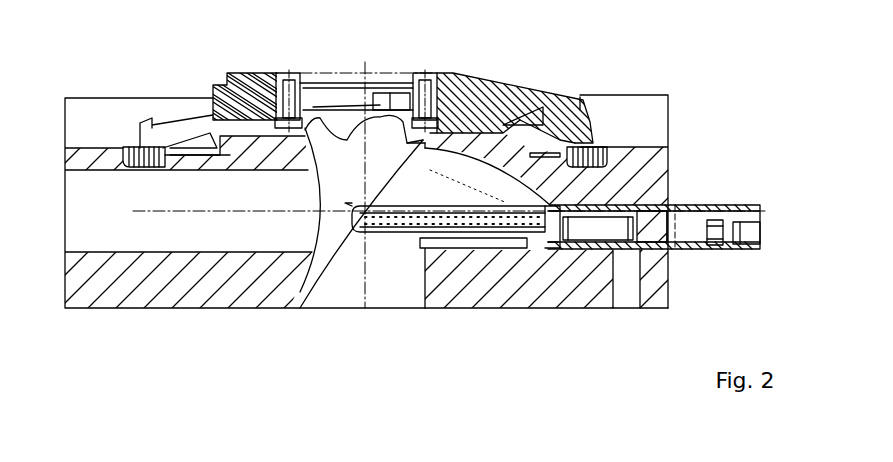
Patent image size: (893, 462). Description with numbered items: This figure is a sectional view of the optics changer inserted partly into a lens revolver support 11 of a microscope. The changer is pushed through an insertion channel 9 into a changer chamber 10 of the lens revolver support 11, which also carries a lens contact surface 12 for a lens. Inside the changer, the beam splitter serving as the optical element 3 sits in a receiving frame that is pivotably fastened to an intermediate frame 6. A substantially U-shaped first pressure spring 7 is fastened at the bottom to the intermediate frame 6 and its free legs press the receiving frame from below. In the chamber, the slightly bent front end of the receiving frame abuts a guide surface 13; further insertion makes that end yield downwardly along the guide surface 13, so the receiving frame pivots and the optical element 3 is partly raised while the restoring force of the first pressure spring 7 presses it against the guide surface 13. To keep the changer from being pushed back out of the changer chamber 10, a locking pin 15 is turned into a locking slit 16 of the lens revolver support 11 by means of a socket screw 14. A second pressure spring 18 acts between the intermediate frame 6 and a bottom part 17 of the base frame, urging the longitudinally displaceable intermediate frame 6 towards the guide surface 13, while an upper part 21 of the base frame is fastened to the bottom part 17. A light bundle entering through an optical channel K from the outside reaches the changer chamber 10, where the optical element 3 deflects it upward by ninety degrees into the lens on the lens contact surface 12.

The optical channel K is at (212, 240).
The optical element 3 is at (383, 223).
The intermediate frame 6 is at (570, 215).
The first pressure spring 7 is at (466, 248).
The insertion channel 9 is at (570, 250).
The changer chamber 10 is at (457, 163).
The lens revolver support 11 is at (552, 86).
The lens contact surface 12 is at (435, 73).
The guide surface 13 is at (330, 243).
The socket screw 14 is at (753, 240).
The locking pin 15 is at (730, 240).
The locking slit 16 is at (630, 290).
The bottom part 17 is at (540, 250).
The second pressure spring 18 is at (622, 233).
The upper part 21 is at (685, 207).